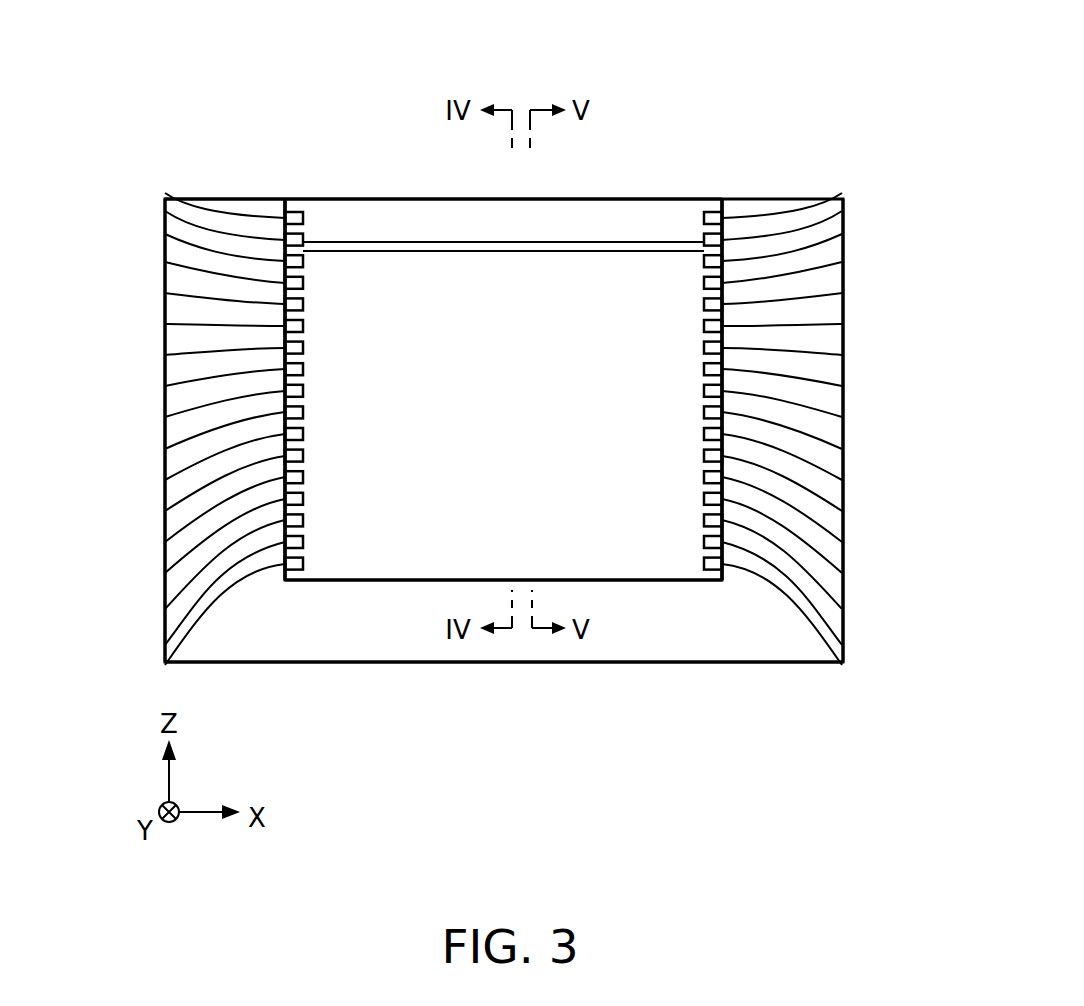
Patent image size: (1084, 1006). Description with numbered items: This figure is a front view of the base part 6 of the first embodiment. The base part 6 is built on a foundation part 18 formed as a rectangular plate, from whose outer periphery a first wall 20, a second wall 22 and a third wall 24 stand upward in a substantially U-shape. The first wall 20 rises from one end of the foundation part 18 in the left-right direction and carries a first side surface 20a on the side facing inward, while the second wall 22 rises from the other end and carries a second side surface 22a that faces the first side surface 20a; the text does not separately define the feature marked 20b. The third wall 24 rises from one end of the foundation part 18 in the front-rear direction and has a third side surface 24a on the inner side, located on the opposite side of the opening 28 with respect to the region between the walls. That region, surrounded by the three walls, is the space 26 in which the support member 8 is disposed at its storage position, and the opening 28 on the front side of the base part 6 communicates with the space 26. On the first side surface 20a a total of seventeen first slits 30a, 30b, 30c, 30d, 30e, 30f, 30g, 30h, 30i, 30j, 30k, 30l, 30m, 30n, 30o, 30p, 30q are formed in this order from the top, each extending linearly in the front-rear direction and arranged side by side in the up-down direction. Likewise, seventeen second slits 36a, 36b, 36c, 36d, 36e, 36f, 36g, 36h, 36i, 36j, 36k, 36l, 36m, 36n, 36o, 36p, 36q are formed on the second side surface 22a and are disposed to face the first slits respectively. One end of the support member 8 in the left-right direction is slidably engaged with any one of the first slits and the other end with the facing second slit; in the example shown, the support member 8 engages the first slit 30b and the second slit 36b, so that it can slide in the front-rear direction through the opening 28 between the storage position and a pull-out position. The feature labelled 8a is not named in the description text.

The base part 6 is at (878, 114).
The support member 8 is at (618, 242).
The upper surface of partition bar 8a is at (549, 242).
The foundation part 18 is at (632, 638).
The first wall 20 is at (240, 207).
The first side surface 20a is at (290, 199).
The upper edge of first side portion 20b is at (239, 199).
The second wall 22 is at (756, 207).
The second side surface 22a is at (706, 203).
The third wall 24 is at (362, 210).
The third side surface 24a is at (421, 212).
The space 26 is at (492, 421).
The opening 28 is at (388, 578).
The first slit 30a is at (165, 193).
The first slit 30b is at (165, 211).
The first slit 30c is at (165, 234).
The first slit 30d is at (165, 262).
The first slit 30e is at (165, 293).
The first slit 30f is at (165, 324).
The first slit 30g is at (165, 355).
The first slit 30h is at (165, 386).
The first slit 30i is at (165, 417).
The first slit 30j is at (165, 449).
The first slit 30k is at (165, 480).
The first slit 30l is at (165, 511).
The first slit 30m is at (165, 542).
The first slit 30n is at (165, 573).
The first slit 30o is at (165, 609).
The first slit 30p is at (165, 645).
The first slit 30q is at (165, 665).
The second slit 36a is at (842, 193).
The second slit 36b is at (842, 211).
The second slit 36c is at (842, 234).
The second slit 36d is at (842, 262).
The second slit 36e is at (842, 293).
The second slit 36f is at (842, 324).
The second slit 36g is at (842, 355).
The second slit 36h is at (842, 386).
The second slit 36i is at (842, 417).
The second slit 36j is at (842, 449).
The second slit 36k is at (842, 480).
The second slit 36l is at (842, 511).
The second slit 36m is at (842, 542).
The second slit 36n is at (842, 573).
The second slit 36o is at (842, 609).
The second slit 36p is at (842, 645).
The second slit 36q is at (842, 665).